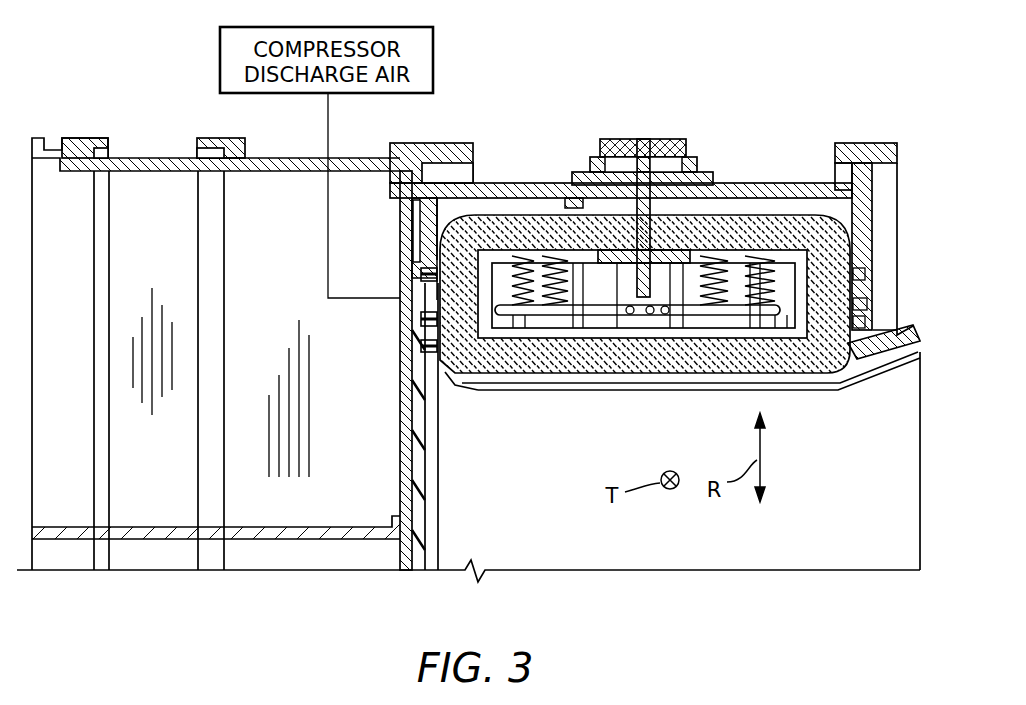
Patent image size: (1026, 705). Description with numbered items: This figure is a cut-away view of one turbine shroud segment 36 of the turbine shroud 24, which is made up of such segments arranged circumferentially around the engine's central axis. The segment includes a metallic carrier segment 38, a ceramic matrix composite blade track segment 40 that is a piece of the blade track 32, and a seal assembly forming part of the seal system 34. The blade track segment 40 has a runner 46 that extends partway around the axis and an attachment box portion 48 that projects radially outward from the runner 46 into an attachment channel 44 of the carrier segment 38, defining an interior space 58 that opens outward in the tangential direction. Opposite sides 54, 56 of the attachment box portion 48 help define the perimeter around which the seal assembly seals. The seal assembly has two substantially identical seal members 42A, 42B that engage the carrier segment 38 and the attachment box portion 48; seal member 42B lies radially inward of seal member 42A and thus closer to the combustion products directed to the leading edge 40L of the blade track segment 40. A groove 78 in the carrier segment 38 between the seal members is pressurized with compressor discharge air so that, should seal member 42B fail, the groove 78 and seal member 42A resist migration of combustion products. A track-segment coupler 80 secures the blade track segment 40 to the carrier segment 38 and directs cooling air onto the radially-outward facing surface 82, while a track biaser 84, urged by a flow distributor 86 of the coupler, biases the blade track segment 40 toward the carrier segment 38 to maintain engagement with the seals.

The turbine shroud 24 is at (745, 158).
The blade track 32 is at (484, 76).
The seal system 34 is at (347, 314).
The turbine shroud segment 36 is at (731, 162).
The carrier segment 38 is at (432, 213).
The blade track segment 40 is at (740, 178).
The leading edge 40L is at (448, 378).
The seal member 42A is at (422, 273).
The seal member 42B is at (420, 322).
The attachment channel 44 is at (539, 203).
The runner 46 is at (785, 364).
The attachment box portion 48 is at (743, 215).
The side 54 is at (420, 350).
The side 56 is at (862, 230).
The interior space 58 is at (738, 252).
The groove 78 is at (442, 295).
The track-segment coupler 80 is at (694, 149).
The radially-outward facing surface 82 is at (525, 335).
The track biaser 84 is at (798, 254).
The flow distributor 86 is at (728, 322).